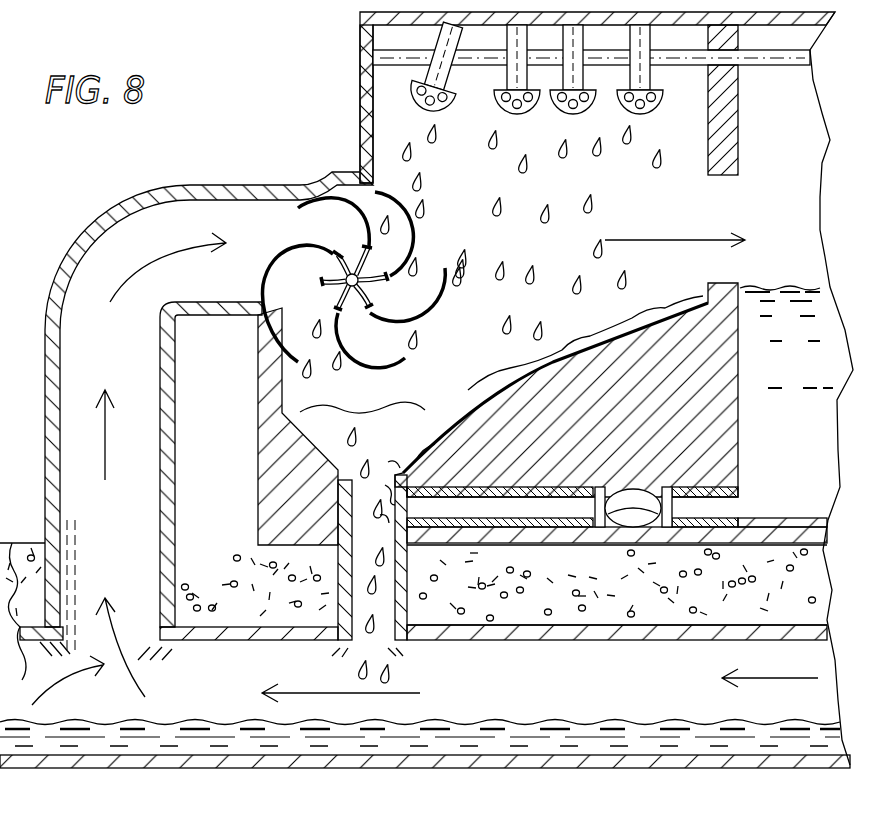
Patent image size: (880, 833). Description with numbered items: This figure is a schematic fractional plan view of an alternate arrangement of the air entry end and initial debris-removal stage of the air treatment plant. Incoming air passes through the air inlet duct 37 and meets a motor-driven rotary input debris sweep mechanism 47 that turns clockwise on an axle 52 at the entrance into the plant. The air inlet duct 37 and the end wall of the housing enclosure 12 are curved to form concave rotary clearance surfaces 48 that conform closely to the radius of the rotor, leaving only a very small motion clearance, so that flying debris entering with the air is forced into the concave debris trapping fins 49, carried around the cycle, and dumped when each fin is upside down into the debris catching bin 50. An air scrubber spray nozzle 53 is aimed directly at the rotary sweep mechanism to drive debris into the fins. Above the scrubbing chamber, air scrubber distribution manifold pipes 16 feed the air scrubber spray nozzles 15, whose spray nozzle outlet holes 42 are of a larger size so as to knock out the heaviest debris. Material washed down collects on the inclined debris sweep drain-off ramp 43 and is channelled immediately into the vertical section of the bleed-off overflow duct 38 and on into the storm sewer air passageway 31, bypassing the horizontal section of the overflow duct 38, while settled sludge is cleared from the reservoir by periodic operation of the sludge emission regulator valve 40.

The housing enclosure 12 is at (360, 26).
The air scrubber spray nozzle 15 is at (553, 131).
The air scrubber distribution manifold pipe 16 is at (762, 70).
The storm sewer air passageway 31 is at (543, 680).
The air inlet duct 37 is at (112, 526).
The bleed-off overflow duct 38 is at (508, 483).
The sludge emission regulator valve 40 is at (632, 480).
The spray nozzle outlet hole 42 is at (454, 98).
The debris sweep drain-off ramp 43 is at (472, 392).
The rotary input debris sweep mechanism 47 is at (249, 284).
The concave rotary clearance surface 48 is at (357, 193).
The concave debris trapping fin 49 is at (421, 247).
The debris catching bin 50 is at (370, 398).
The axle 52 is at (367, 288).
The air scrubber spray nozzle 53 is at (438, 55).